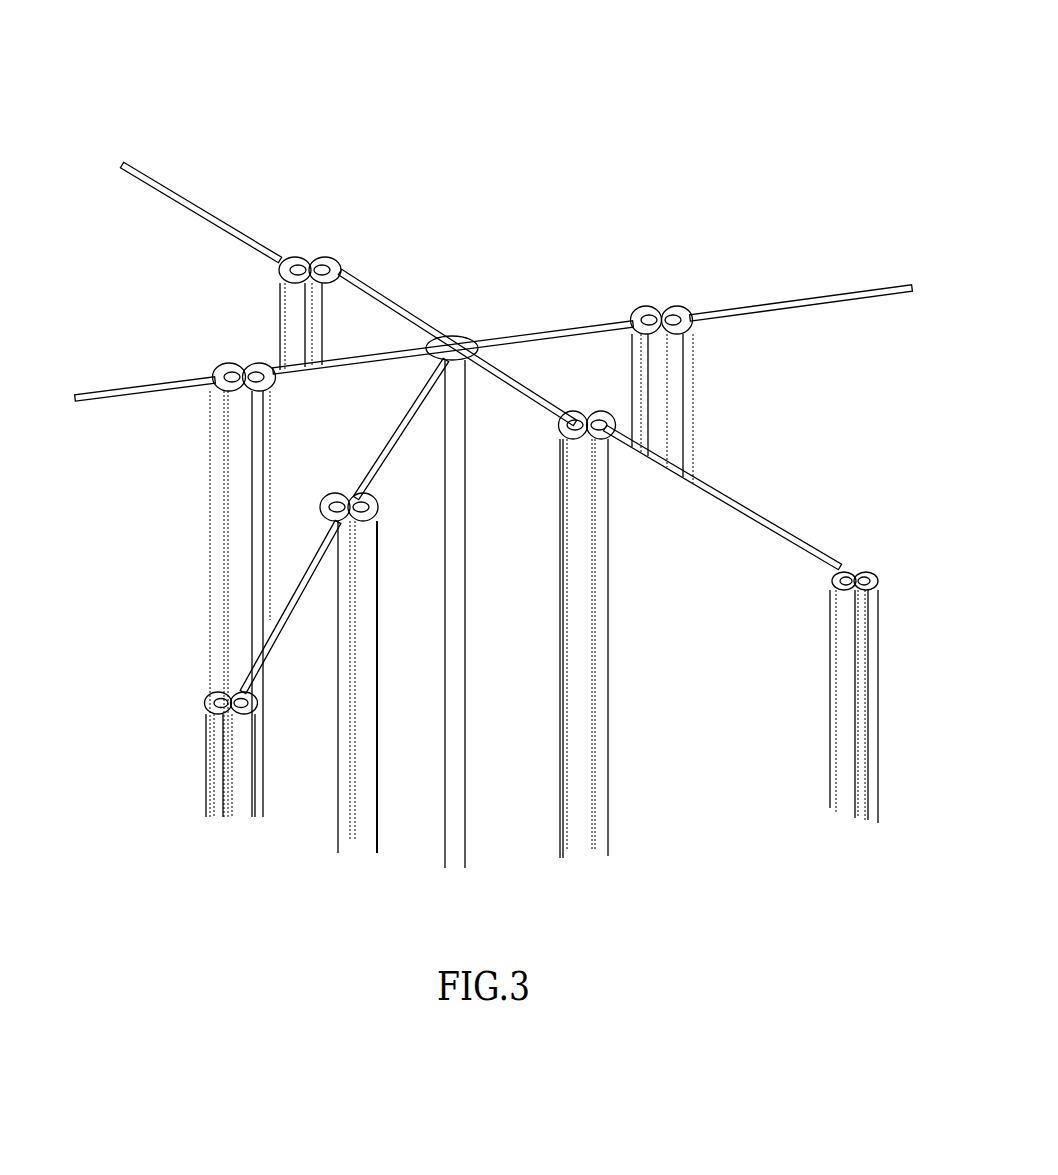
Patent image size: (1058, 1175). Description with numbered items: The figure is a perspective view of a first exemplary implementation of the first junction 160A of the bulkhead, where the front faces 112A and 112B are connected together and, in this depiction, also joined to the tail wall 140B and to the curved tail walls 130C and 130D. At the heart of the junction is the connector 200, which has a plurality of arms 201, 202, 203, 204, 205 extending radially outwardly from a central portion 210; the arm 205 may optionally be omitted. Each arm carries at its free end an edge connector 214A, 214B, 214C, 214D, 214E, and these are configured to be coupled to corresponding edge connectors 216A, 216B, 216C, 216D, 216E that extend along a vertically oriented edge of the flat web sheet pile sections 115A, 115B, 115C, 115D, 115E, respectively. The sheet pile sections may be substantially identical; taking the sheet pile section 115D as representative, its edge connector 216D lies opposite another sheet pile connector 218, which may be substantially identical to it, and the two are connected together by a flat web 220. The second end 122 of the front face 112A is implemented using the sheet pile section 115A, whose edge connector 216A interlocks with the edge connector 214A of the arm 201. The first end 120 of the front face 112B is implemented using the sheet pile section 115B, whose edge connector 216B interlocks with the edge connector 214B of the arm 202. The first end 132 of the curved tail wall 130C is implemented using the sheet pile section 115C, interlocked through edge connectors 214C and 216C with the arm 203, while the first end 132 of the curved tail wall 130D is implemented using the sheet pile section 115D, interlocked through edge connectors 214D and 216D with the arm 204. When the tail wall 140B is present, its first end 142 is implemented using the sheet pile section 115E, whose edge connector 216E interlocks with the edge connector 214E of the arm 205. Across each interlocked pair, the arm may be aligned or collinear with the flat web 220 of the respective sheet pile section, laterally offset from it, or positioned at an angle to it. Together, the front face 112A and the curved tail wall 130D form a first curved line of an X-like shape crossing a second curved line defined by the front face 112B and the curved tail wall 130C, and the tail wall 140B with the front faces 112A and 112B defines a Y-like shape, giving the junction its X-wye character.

The first junction 160A is at (688, 98).
The front face 112A is at (143, 170).
The front face 112B is at (870, 287).
The flat web 220 is at (172, 235).
The edge connector 216A is at (258, 258).
The edge connector 216B is at (668, 330).
The edge connector 216C is at (233, 388).
The edge connector 216D is at (582, 442).
The edge connector 216E is at (363, 793).
The edge connector 214A is at (338, 262).
The edge connector 214B is at (640, 316).
The edge connector 214C is at (253, 362).
The edge connector 214D is at (612, 418).
The edge connector 214E is at (323, 492).
The second end 122 is at (304, 260).
The first end 120 is at (668, 307).
The first end 132 is at (220, 363).
The first end 142 is at (330, 513).
The connector 200 is at (352, 290).
The central portion 210 is at (453, 335).
The arm 201 is at (385, 344).
The arm 202 is at (593, 377).
The arm 203 is at (375, 409).
The arm 204 is at (535, 461).
The arm 205 is at (438, 484).
The flat web sheet pile section 115A is at (237, 269).
The flat web sheet pile section 115B is at (792, 361).
The flat web sheet pile section 115C is at (172, 439).
The flat web sheet pile section 115D is at (722, 597).
The flat web sheet pile section 115E is at (335, 662).
The curved tail wall 130C is at (107, 390).
The curved tail wall 130D is at (828, 575).
The tail wall 140B is at (243, 663).
The sheet pile connector 218 is at (880, 692).